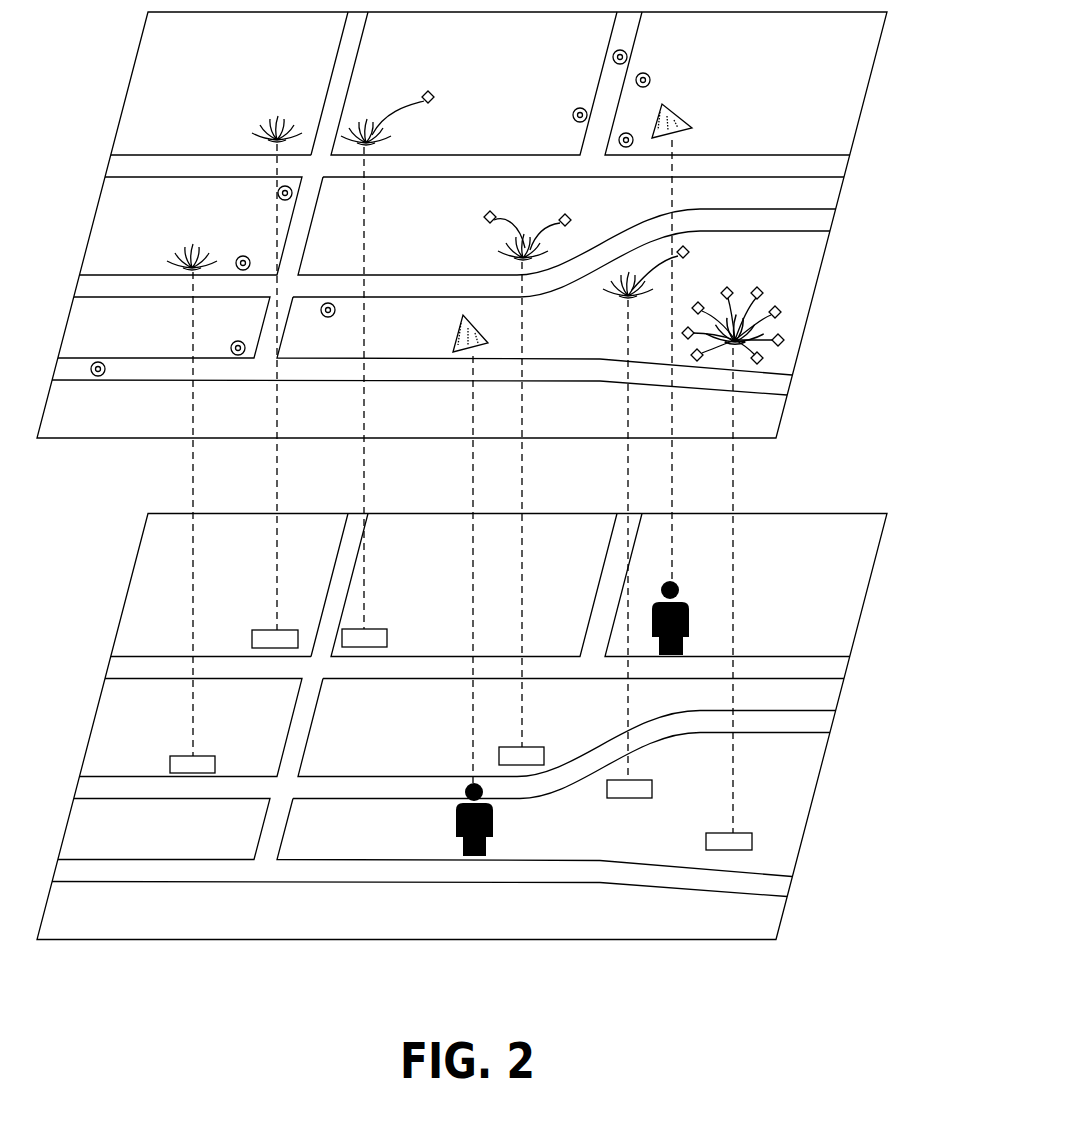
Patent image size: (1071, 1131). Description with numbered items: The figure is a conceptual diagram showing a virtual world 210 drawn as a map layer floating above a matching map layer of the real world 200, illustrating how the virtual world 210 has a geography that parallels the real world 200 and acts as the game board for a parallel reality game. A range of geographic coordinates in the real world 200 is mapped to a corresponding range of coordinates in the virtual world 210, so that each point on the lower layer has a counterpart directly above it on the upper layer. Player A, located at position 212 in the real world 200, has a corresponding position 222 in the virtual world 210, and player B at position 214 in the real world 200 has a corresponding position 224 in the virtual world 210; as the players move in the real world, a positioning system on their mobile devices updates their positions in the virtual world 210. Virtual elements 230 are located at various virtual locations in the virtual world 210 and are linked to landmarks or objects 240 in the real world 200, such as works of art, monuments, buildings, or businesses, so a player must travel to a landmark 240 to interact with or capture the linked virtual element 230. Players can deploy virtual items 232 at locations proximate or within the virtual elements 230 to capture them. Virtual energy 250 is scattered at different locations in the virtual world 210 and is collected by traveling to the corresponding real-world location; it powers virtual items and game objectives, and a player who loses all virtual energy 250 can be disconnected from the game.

The real world 200 is at (867, 598).
The virtual world 210 is at (853, 133).
The position of player A 212 is at (455, 825).
The position of player B 214 is at (690, 608).
The corresponding position of player A 222 is at (486, 343).
The corresponding position of player B 224 is at (690, 128).
The virtual elements 230 is at (282, 122).
The virtual items 232 is at (435, 90).
The real-world landmarks or objects 240 is at (277, 628).
The virtual energy 250 is at (650, 78).